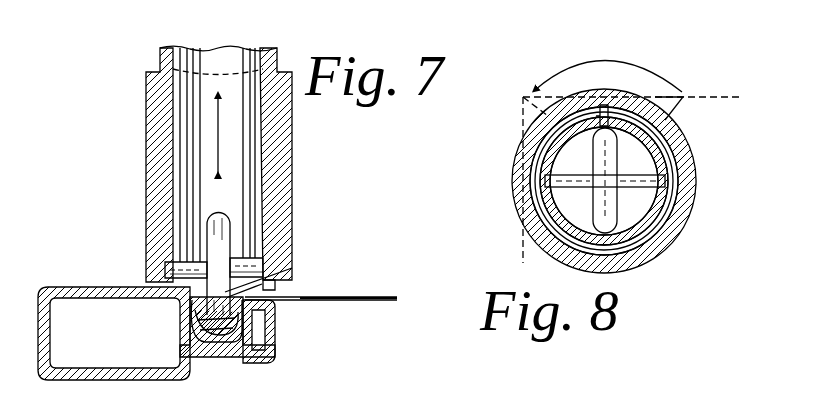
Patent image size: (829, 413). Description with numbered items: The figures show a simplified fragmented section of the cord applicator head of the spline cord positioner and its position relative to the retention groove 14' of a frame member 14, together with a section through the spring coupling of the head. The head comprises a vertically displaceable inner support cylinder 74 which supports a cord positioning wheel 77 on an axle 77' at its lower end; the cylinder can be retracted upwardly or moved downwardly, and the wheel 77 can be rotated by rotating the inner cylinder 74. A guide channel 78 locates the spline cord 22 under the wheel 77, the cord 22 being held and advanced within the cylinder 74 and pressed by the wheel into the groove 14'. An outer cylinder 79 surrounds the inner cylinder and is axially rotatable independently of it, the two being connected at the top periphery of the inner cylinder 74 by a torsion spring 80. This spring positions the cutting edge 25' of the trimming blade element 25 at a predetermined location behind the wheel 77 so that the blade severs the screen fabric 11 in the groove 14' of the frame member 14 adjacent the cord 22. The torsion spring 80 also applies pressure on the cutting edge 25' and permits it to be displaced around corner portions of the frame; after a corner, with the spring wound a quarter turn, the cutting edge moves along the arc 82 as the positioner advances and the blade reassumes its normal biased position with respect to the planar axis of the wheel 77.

In FIG. 7, the screen fabric 11 is at (340, 300).
In FIG. 7, the frame member 14 is at (114, 310).
In FIG. 7, the groove 14' is at (194, 327).
In FIG. 7, the spline cord 22 is at (232, 347).
In FIG. 7, the trimming blade element 25 is at (311, 278).
In FIG. 8, the cutting edge 25' is at (633, 153).
In FIG. 7, the inner support cylinder 74 is at (263, 98).
In FIG. 7, the cord positioning wheel 77 is at (166, 259).
In FIG. 8, the cord positioning wheel 77 is at (572, 183).
In FIG. 7, the axle 77' is at (257, 240).
In FIG. 8, the guide channel 78 is at (613, 243).
In FIG. 7, the outer cylinder 79 is at (292, 150).
In FIG. 8, the torsion spring 80 is at (677, 190).
In FIG. 8, the arc 82 is at (613, 62).